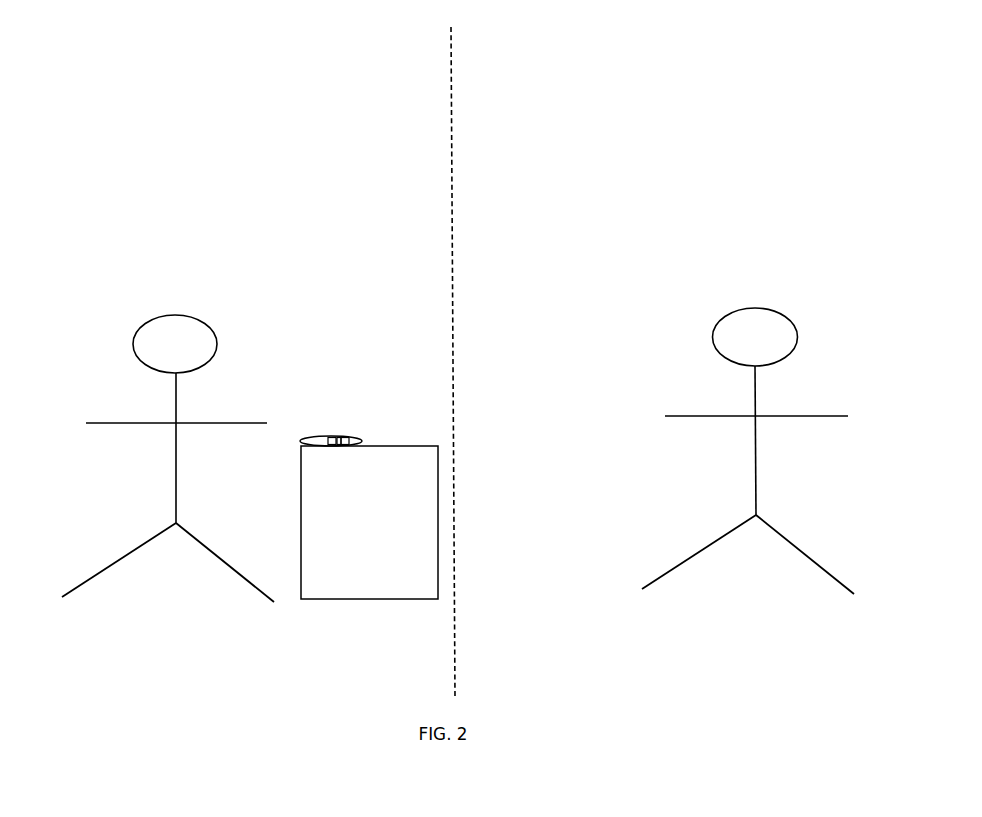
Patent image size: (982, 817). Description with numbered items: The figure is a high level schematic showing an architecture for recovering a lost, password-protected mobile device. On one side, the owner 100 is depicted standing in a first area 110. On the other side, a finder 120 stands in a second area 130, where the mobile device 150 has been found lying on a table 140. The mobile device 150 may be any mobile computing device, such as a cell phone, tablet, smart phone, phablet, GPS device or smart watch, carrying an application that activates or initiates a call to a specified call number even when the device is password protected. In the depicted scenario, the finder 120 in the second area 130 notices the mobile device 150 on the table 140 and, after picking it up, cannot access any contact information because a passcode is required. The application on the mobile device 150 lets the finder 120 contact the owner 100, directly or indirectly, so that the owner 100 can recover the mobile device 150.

The owner 100 is at (734, 300).
The first area 110 is at (714, 71).
The finder 120 is at (210, 307).
The second area 130 is at (125, 71).
The table 140 is at (369, 522).
The mobile device 150 is at (338, 421).